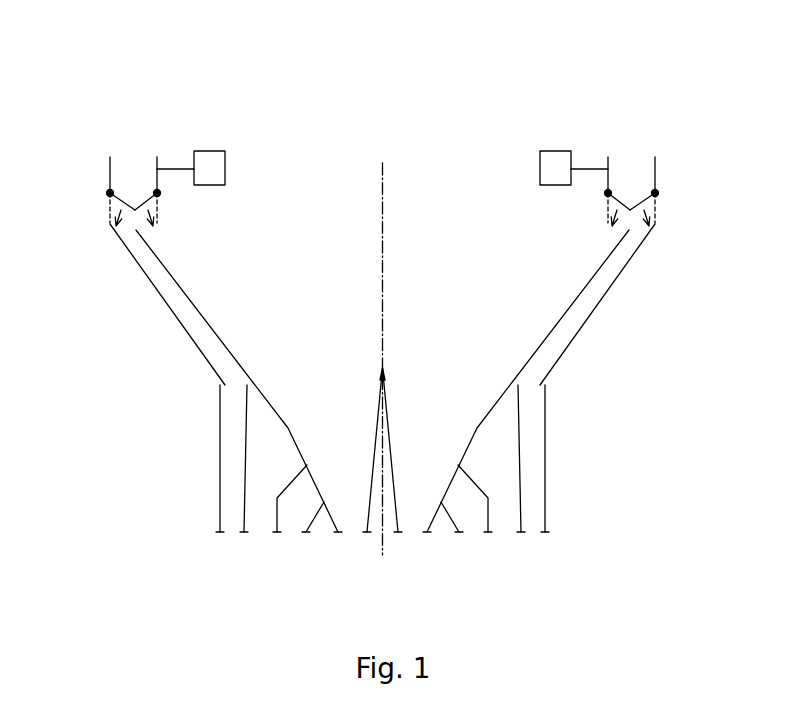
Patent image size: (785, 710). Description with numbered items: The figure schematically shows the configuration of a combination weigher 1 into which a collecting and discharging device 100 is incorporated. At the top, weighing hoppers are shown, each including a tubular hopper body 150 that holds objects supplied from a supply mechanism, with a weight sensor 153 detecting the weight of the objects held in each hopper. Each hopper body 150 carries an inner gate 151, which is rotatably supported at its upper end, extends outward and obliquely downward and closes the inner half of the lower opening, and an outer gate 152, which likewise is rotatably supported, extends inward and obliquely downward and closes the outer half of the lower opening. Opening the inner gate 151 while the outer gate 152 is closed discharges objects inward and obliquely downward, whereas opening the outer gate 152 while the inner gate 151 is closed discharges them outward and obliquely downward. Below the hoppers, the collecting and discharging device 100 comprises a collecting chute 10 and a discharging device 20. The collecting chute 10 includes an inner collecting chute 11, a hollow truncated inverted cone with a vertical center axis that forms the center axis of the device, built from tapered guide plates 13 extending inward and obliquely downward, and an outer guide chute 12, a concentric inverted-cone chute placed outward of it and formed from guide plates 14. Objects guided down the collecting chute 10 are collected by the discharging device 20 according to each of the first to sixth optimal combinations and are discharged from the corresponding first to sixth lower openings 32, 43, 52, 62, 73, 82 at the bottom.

The combination weigher 1 is at (649, 78).
The collecting and discharging device 100 is at (409, 378).
The collecting chute 10 is at (395, 378).
The inner collecting chute 11 is at (402, 381).
The outer guide chute 12 is at (382, 308).
The guide plate 13 is at (190, 300).
The guide plate 14 is at (153, 285).
The discharging device 20 is at (451, 484).
The first lower opening 32 is at (352, 533).
The second lower opening 43 is at (292, 533).
The third lower opening 52 is at (230, 533).
The fourth lower opening 62 is at (415, 533).
The fifth lower opening 73 is at (470, 533).
The sixth lower opening 82 is at (532, 533).
The hopper body 150 is at (383, 159).
The inner gate 151 is at (140, 198).
The outer gate 152 is at (124, 203).
The weight sensor 153 is at (205, 151).